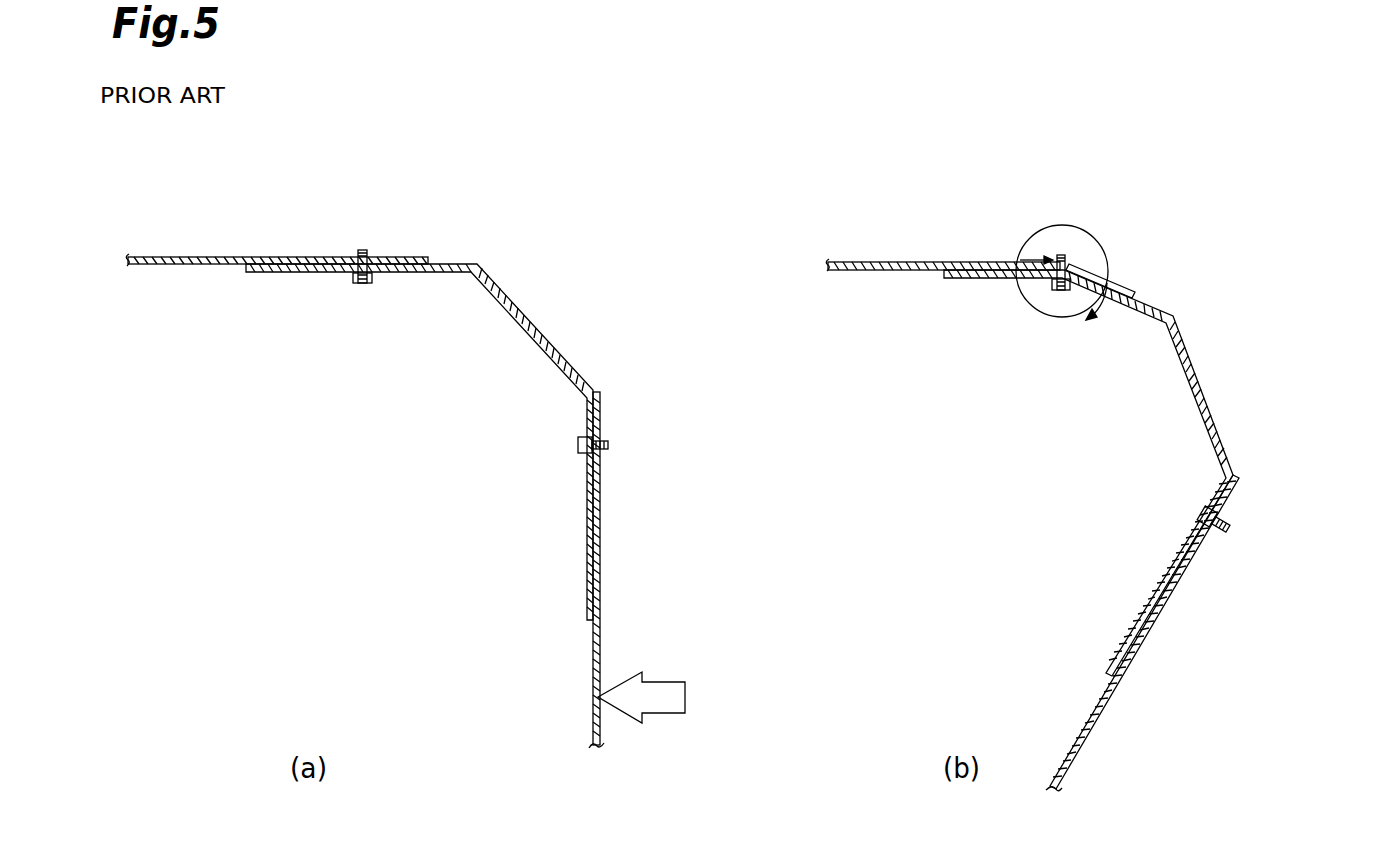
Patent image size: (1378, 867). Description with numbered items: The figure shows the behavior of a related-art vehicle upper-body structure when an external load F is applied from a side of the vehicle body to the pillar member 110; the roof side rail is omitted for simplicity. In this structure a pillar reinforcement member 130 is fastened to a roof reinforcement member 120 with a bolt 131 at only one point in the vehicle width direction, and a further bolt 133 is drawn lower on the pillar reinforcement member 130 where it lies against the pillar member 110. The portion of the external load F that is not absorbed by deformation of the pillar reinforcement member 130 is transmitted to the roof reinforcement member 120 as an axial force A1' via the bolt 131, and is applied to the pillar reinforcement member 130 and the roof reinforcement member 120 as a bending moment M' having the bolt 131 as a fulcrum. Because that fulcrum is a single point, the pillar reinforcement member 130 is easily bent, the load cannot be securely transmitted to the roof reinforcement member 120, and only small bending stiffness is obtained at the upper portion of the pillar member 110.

The pillar member 110 is at (600, 660).
The roof reinforcement member 120 is at (226, 257).
The pillar reinforcement member 130 is at (528, 320).
The bolt 131 is at (368, 252).
The bolt 133 is at (578, 447).
The external load F is at (686, 697).
The axial force A1' is at (1062, 226).
The bending moment M' is at (1153, 276).